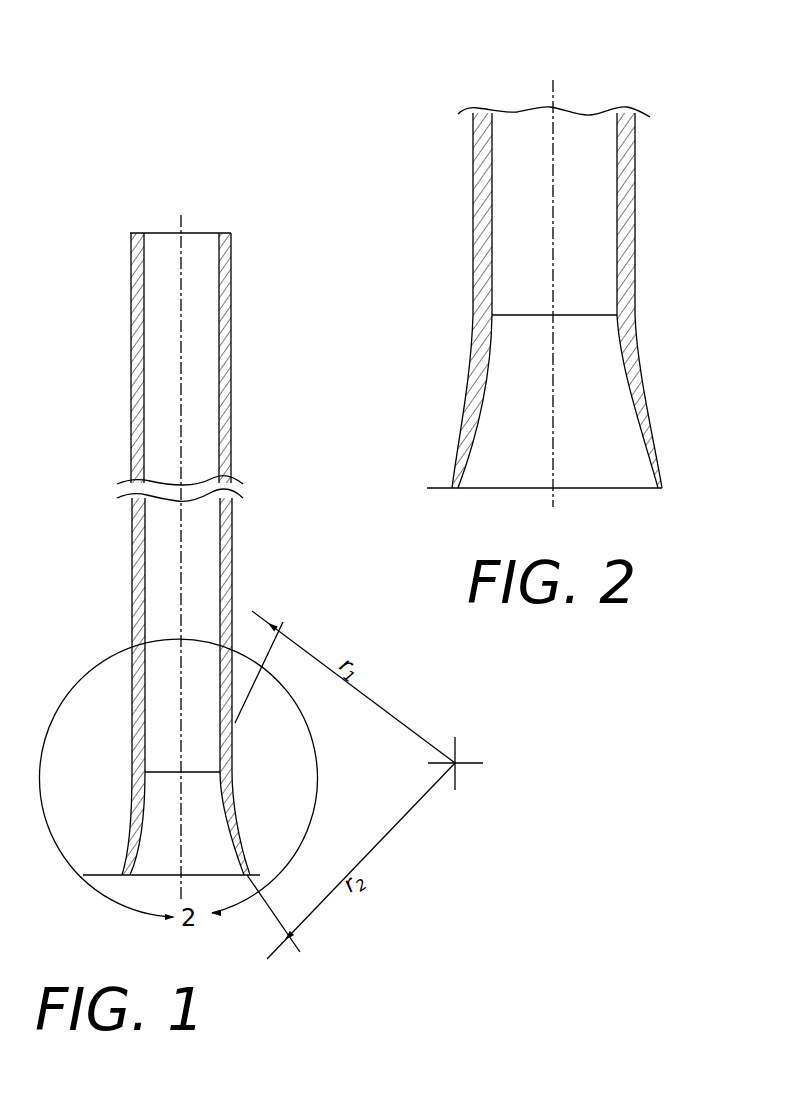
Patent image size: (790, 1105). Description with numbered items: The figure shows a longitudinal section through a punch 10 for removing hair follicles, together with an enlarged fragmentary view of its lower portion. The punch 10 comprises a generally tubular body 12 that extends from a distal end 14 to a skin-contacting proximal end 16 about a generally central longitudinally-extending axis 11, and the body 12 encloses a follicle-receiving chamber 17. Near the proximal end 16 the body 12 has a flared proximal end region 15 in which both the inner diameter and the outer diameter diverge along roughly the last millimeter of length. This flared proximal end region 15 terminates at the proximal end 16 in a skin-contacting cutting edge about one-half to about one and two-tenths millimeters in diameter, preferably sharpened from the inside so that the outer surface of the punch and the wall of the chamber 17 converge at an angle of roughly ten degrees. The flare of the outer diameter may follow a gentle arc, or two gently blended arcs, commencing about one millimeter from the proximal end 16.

In FIG. 1, the punch 10 is at (266, 334).
In FIG. 2, the axis 11 is at (548, 92).
In FIG. 1, the tubular body 12 is at (234, 560).
In FIG. 2, the tubular body 12 is at (473, 235).
In FIG. 1, the distal end 14 is at (233, 236).
In FIG. 2, the flared proximal end region 15 is at (470, 398).
In FIG. 1, the proximal end 16 is at (262, 875).
In FIG. 2, the proximal end 16 is at (445, 488).
In FIG. 1, the follicle-receiving chamber 17 is at (216, 856).